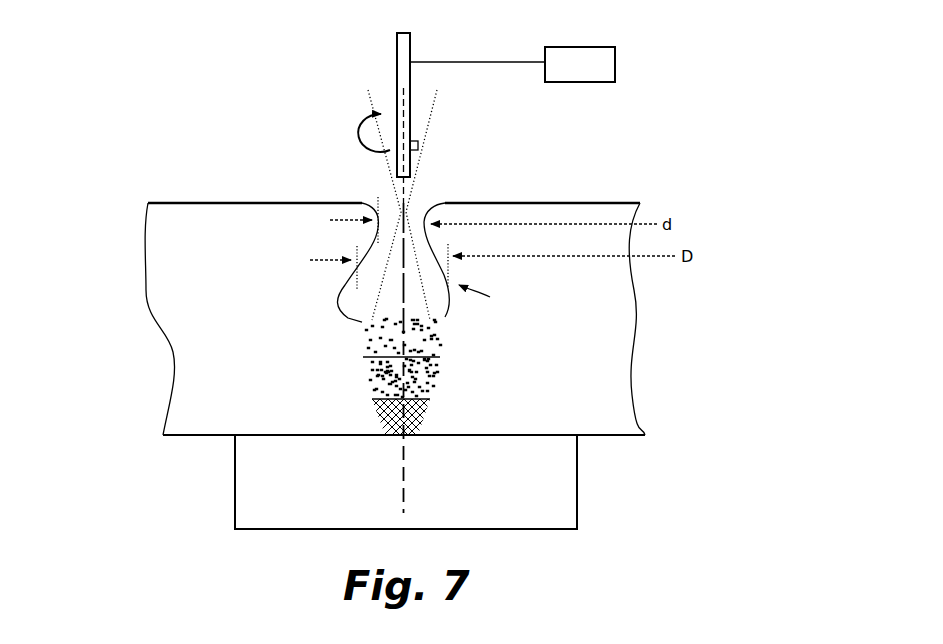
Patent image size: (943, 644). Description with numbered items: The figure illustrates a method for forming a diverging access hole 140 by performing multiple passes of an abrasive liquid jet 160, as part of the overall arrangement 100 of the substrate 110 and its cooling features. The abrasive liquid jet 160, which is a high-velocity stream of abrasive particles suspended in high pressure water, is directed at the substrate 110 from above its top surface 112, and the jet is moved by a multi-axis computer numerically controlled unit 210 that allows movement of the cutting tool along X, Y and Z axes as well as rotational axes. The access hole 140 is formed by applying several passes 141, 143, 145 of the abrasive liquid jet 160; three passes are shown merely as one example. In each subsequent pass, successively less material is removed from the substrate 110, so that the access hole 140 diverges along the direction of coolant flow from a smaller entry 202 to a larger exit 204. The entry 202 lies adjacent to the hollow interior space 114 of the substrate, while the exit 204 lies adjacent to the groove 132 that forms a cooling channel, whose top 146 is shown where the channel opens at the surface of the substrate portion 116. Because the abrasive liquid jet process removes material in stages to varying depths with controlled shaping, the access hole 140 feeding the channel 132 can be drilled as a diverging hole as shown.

The welding system 100 is at (98, 157).
The substrate 110 is at (188, 282).
The top surface of first workpiece 112 is at (250, 200).
The hollow interior space 114 is at (352, 513).
The second workpiece 116 is at (591, 439).
The groove 132 is at (451, 293).
The access hole 140 is at (342, 372).
The first pass 141 is at (362, 338).
The second pass 143 is at (437, 370).
The third pass 145 is at (425, 410).
The top of the cooling channel 146 is at (424, 208).
The abrasive liquid jet 160 is at (397, 52).
The entry 202 is at (414, 442).
The exit 204 is at (454, 324).
The multi-axis computer numerically controlled (CNC) unit 210 is at (512, 64).